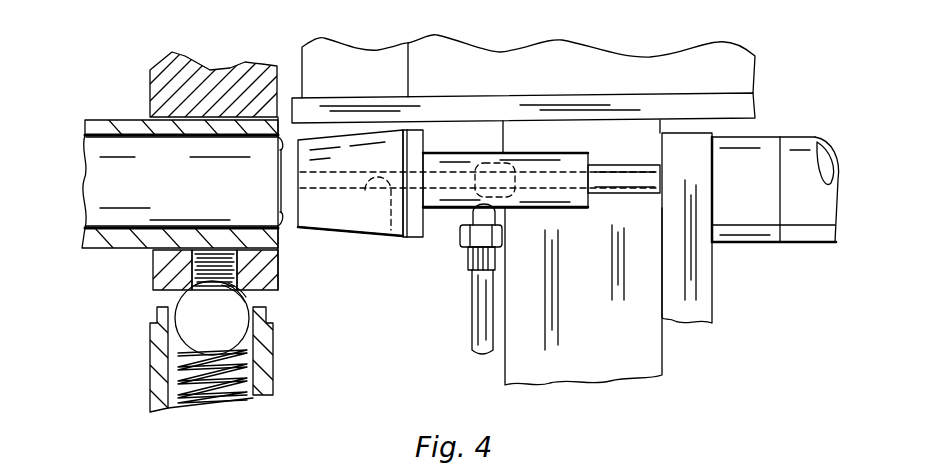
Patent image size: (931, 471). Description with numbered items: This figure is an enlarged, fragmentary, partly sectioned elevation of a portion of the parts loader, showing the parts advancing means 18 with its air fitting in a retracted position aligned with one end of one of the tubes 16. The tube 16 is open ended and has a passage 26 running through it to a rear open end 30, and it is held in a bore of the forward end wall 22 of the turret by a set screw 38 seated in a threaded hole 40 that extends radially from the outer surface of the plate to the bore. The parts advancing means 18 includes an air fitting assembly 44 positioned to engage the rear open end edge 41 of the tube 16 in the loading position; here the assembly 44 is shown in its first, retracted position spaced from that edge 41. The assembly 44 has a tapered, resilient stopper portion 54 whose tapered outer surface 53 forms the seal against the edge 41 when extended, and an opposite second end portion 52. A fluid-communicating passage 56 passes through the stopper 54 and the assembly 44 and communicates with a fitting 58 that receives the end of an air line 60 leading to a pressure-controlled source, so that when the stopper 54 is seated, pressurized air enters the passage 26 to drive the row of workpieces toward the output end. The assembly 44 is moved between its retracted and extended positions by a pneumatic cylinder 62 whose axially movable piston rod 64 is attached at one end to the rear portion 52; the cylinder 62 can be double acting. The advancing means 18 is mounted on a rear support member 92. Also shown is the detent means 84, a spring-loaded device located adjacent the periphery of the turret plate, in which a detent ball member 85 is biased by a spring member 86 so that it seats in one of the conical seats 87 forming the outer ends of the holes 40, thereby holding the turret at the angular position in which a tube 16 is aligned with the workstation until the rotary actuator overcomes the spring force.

The tube 16 is at (113, 120).
The forward end wall 22 is at (246, 63).
The passage 26 is at (88, 138).
The rear open end 30 is at (252, 212).
The rear open end edge 41 is at (280, 226).
The set screw 38 is at (155, 258).
The threaded hole 40 is at (190, 288).
The conical seat 87 is at (176, 303).
The detent means 84 is at (150, 373).
The detent ball member 85 is at (238, 332).
The spring member 86 is at (212, 390).
The stopper portion 54 is at (340, 200).
The tapered outer surface 53 is at (362, 240).
The fluid-communicating passage 56 is at (391, 232).
The fitting 58 is at (473, 215).
The air line 60 is at (473, 313).
The air fitting assembly 44 is at (580, 211).
The second end portion 52 is at (590, 208).
The piston rod 64 is at (622, 165).
The rear support member 92 is at (758, 106).
The pneumatic cylinder 62 is at (812, 137).
The parts advancing means 18 is at (753, 255).